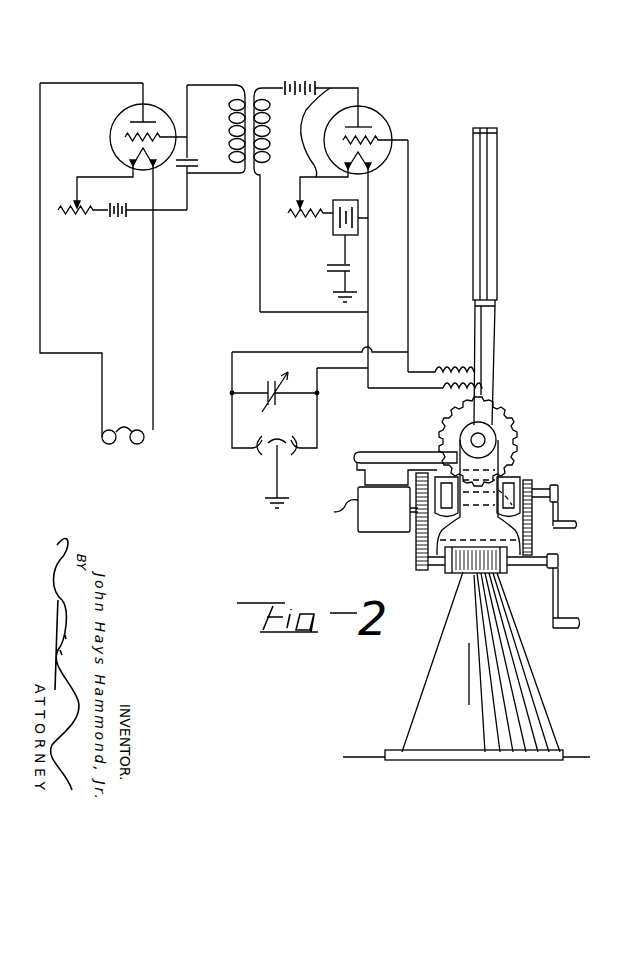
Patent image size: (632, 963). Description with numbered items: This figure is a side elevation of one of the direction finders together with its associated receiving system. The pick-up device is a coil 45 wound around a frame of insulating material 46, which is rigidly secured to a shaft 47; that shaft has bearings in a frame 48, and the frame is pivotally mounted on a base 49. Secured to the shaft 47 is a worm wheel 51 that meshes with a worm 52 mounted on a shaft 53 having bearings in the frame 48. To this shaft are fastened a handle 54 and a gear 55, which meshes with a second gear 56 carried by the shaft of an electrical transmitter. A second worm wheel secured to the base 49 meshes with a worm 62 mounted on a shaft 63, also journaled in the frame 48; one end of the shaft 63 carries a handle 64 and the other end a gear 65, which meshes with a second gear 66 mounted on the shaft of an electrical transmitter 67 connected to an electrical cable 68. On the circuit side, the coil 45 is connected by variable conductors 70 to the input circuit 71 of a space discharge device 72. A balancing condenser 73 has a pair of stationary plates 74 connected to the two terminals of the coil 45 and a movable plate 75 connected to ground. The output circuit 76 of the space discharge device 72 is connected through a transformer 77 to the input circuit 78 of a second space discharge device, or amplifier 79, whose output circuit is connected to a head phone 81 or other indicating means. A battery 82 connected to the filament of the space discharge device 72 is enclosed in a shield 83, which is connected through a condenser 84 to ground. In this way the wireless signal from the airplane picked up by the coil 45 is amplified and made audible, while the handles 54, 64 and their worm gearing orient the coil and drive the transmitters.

The coil 45 is at (487, 248).
The frame of insulating material 46 is at (489, 283).
The shaft 47 is at (482, 438).
The frame 48 is at (502, 456).
The base 49 is at (530, 665).
The worm wheel 51 is at (500, 410).
The worm 52 is at (490, 465).
The shaft 53 is at (560, 487).
The handle 54 is at (560, 513).
The gear 55 is at (533, 480).
The second gear 56 is at (540, 525).
The worm 62 is at (462, 572).
The shaft 63 is at (556, 574).
The handle 64 is at (559, 598).
The gear 65 is at (420, 563).
The second gear 66 is at (416, 540).
The electrical transmitter 67 is at (368, 527).
The electrical cable 68 is at (344, 518).
The variable conductors 70 is at (448, 370).
The input circuit 71 is at (406, 186).
The space discharge device 72 is at (391, 120).
The balancing condenser 73 is at (288, 456).
The stationary plates 74 is at (232, 439).
The movable plate 75 is at (266, 455).
The output circuit 76 is at (311, 132).
The transformer 77 is at (250, 97).
The input circuit 78 is at (235, 198).
The amplifier 79 is at (112, 130).
The head phone 81 is at (126, 444).
The battery 82 is at (358, 228).
The shield 83 is at (330, 232).
The condenser 84 is at (326, 266).